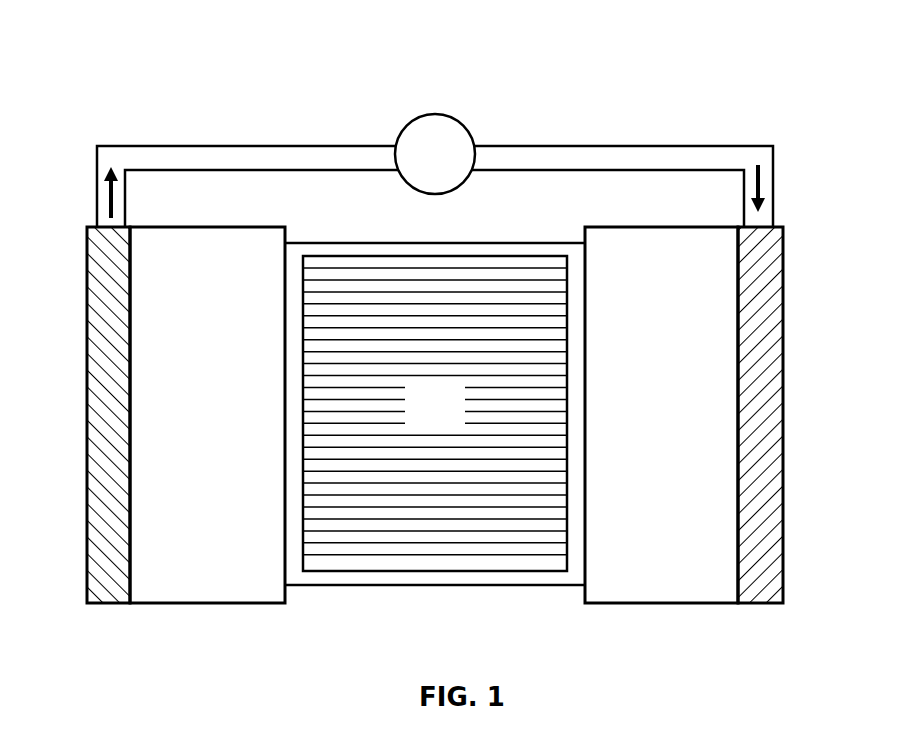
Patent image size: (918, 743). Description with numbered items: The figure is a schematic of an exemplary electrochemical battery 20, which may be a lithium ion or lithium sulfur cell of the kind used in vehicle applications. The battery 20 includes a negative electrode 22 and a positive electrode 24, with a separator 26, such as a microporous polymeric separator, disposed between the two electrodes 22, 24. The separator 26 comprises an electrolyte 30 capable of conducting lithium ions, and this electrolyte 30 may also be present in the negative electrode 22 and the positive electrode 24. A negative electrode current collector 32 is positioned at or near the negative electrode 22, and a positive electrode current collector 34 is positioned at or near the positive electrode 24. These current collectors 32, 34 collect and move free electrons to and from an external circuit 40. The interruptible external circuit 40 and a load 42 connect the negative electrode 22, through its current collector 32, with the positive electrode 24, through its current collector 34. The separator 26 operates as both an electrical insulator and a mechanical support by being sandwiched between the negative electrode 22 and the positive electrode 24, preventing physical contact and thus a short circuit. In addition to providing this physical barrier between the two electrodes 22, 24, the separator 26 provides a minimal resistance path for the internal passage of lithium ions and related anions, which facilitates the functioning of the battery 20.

The battery 20 is at (90, 84).
The negative electrode 22 is at (207, 415).
The positive electrode 24 is at (661, 415).
The separator 26 is at (432, 587).
The electrolyte 30 is at (435, 413).
The negative electrode current collector 32 is at (85, 309).
The positive electrode current collector 34 is at (785, 303).
The external circuit 40 is at (249, 143).
The load 42 is at (435, 154).